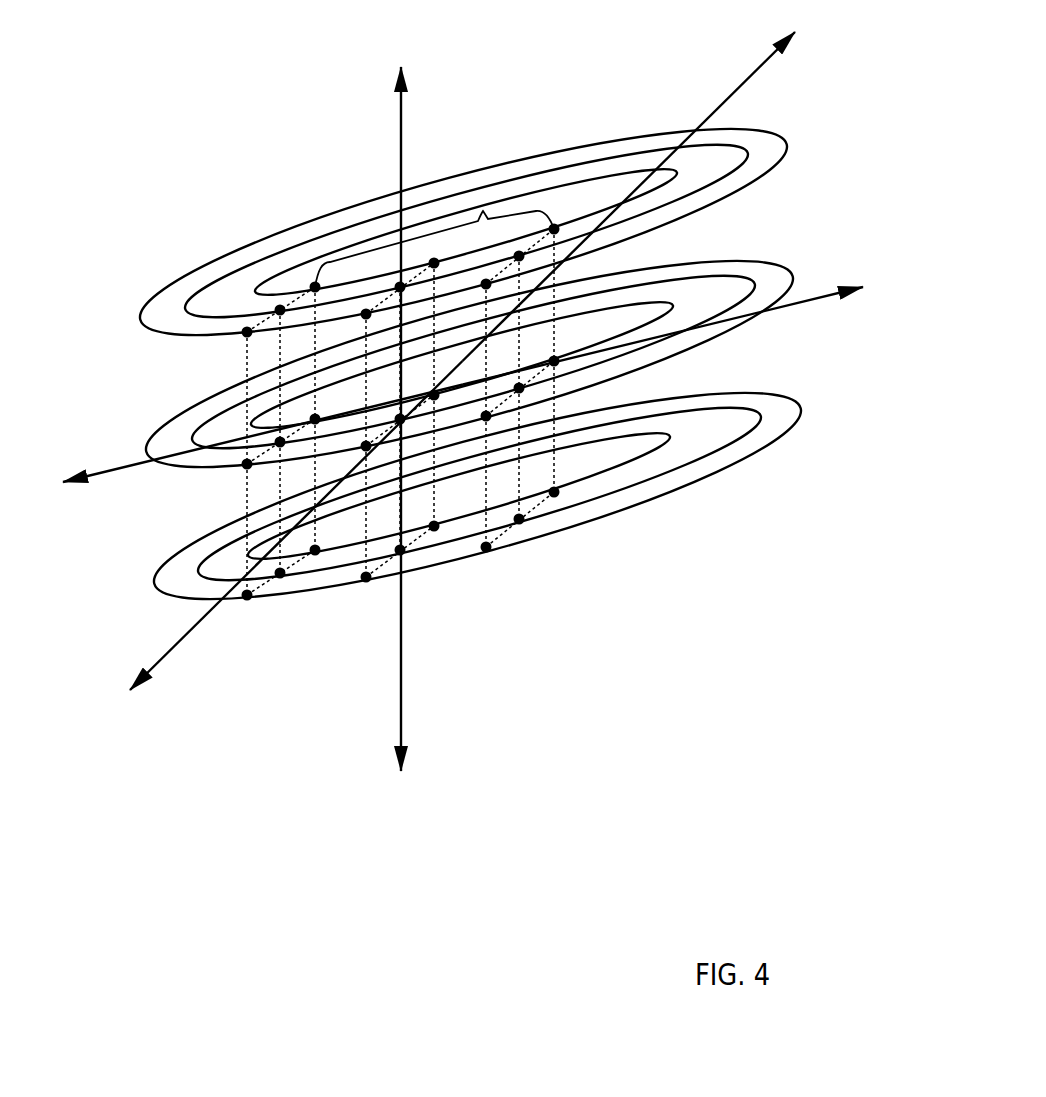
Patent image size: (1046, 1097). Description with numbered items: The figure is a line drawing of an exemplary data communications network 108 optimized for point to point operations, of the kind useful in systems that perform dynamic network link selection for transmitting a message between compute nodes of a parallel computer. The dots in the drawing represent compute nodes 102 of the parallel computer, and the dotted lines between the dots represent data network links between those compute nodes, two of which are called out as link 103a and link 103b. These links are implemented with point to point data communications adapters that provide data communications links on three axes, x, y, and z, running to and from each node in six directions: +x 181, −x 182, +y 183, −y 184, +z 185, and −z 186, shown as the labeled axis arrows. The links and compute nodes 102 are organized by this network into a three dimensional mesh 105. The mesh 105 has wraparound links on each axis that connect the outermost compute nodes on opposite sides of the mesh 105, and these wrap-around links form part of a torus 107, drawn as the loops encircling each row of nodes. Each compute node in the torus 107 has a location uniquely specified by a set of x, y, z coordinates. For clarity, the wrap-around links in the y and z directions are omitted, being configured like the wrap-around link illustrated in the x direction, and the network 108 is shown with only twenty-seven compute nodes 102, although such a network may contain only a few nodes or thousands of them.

The compute nodes 102 is at (486, 548).
The data network link 103a is at (247, 358).
The data network link 103b is at (247, 492).
The mesh 105 is at (494, 208).
The torus 107 is at (231, 238).
The data communications network 108 is at (357, 1005).
The +x direction 181 is at (901, 321).
The −x direction 182 is at (59, 523).
The +y direction 183 is at (839, 60).
The −y direction 184 is at (125, 745).
The +z direction 185 is at (416, 60).
The −z direction 186 is at (418, 835).